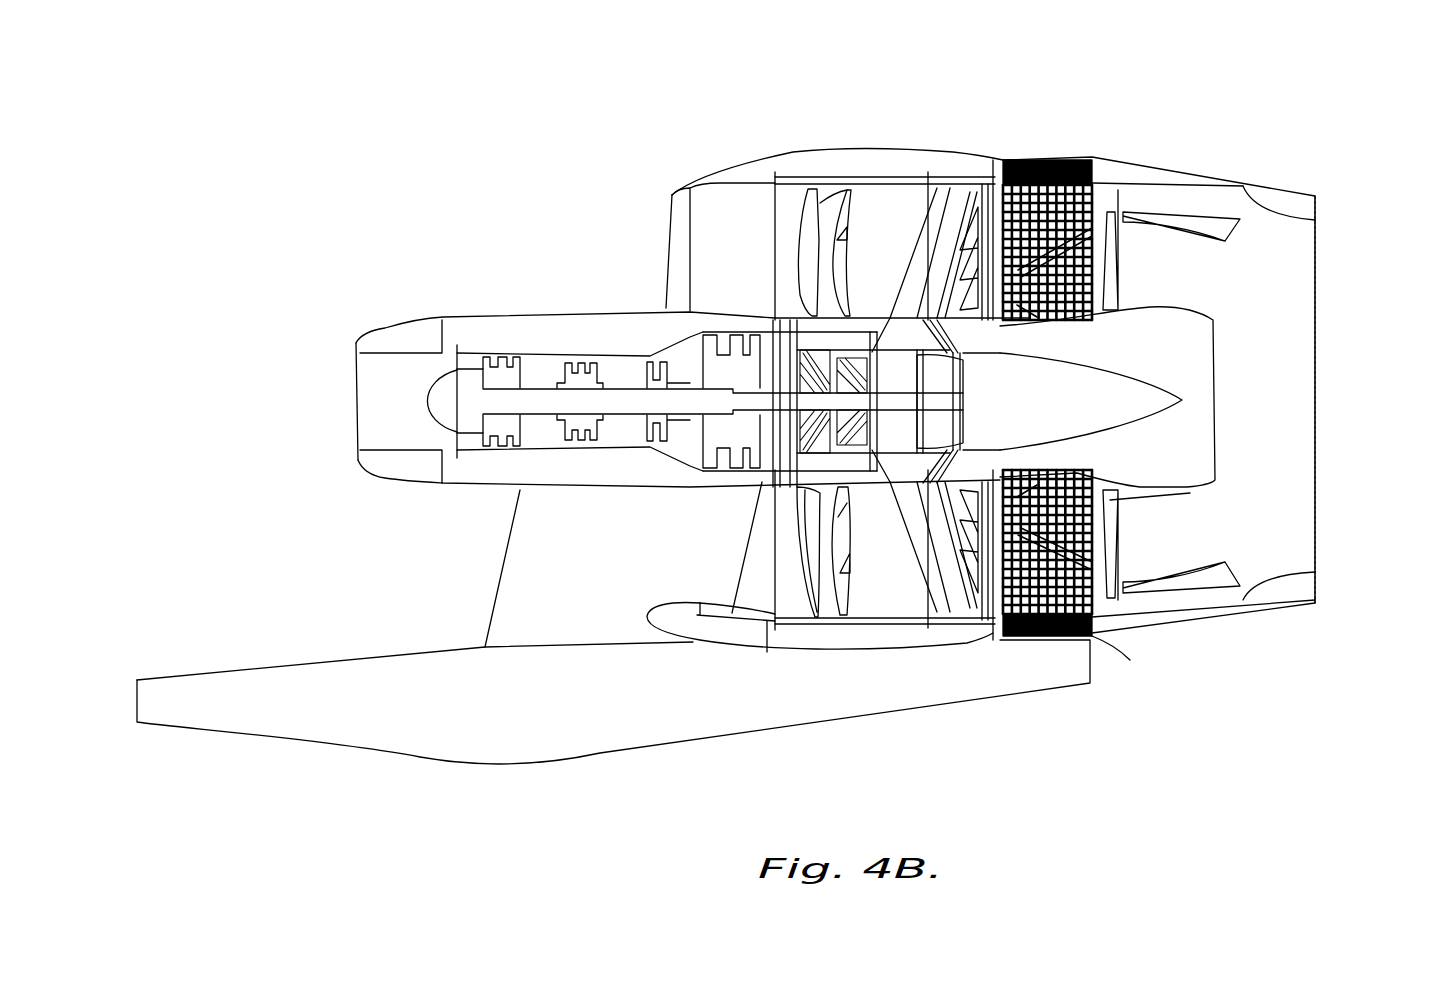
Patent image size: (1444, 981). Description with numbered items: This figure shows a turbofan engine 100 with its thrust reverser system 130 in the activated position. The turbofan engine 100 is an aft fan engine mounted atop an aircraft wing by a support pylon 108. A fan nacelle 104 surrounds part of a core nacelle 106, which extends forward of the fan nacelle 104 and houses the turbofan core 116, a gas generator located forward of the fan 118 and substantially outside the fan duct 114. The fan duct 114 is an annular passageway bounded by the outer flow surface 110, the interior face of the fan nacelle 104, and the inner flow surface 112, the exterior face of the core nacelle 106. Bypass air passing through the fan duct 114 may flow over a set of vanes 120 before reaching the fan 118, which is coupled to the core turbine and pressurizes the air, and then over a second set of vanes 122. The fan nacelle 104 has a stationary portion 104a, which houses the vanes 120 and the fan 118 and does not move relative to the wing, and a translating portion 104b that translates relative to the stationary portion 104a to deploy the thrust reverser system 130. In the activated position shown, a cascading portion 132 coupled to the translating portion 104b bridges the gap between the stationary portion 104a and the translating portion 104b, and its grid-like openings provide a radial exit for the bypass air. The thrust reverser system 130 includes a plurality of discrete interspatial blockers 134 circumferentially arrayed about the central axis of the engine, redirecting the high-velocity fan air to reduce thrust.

The turbofan engine 100 is at (348, 216).
The fan nacelle 104 is at (856, 148).
The stationary portion 104a is at (797, 151).
The translating portion 104b is at (1147, 170).
The core nacelle 106 is at (475, 488).
The support pylon 108 is at (410, 733).
The outer flow surface 110 is at (1240, 195).
The inner flow surface 112 is at (1170, 497).
The fan duct 114 is at (1315, 303).
The turbofan core 116 is at (370, 420).
The fan 118 is at (808, 245).
The vanes 120 is at (705, 275).
The second set of vanes 122 is at (955, 207).
The thrust reverser system 130 is at (1123, 265).
The cascading portion 132 is at (1097, 640).
The interspatial blockers 134 is at (1047, 398).